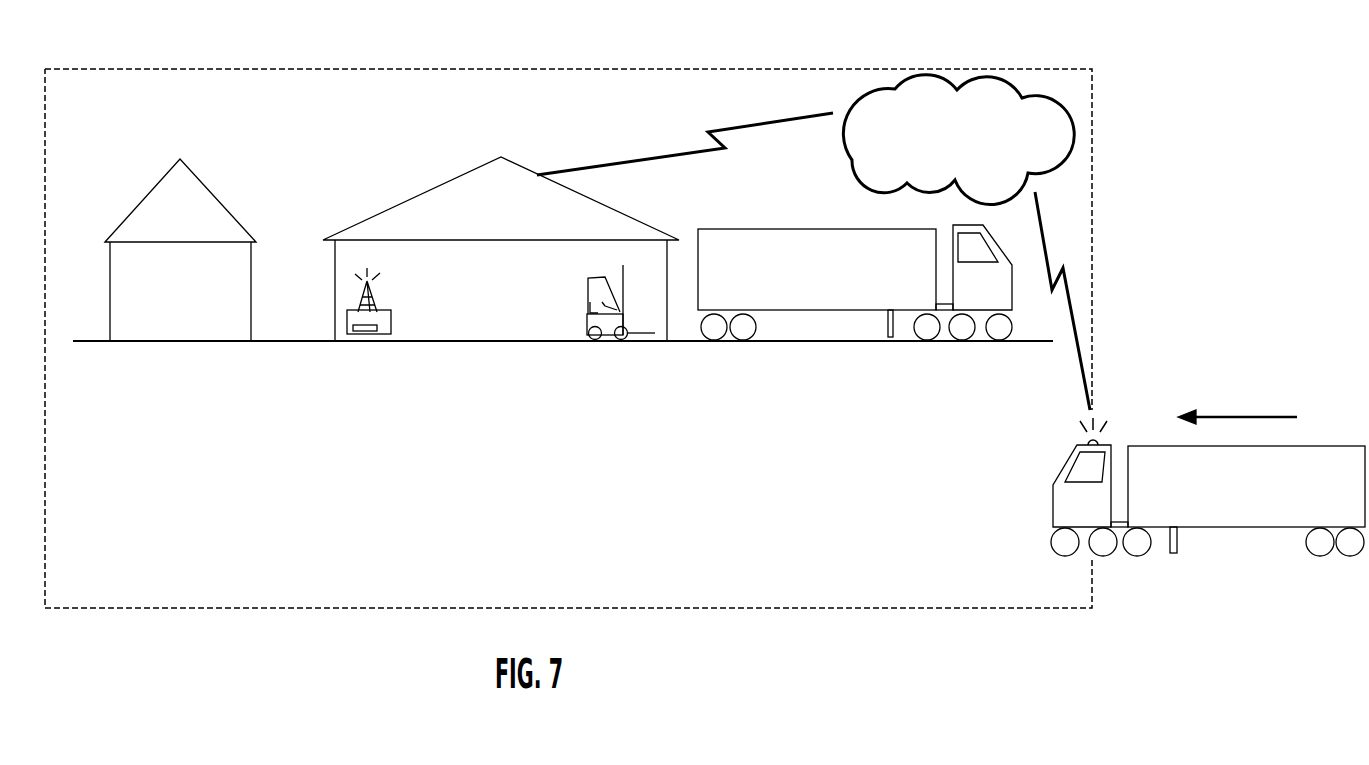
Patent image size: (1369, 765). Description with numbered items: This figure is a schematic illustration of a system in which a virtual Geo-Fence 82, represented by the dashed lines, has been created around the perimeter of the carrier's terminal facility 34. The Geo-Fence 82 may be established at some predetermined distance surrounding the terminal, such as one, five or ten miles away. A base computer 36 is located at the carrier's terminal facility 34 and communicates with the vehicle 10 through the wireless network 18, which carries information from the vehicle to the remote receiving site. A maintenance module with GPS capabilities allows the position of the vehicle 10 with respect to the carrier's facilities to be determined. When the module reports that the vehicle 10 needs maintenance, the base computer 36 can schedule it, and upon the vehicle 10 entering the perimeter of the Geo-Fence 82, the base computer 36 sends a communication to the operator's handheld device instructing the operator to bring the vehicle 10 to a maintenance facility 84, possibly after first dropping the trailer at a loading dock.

The vehicle 10 is at (803, 229).
The wireless network 18 is at (962, 173).
The carrier's terminal facility 34 is at (615, 208).
The base computer 36 is at (391, 322).
The Geo-Fence 82 is at (1093, 222).
The maintenance facility 84 is at (217, 197).